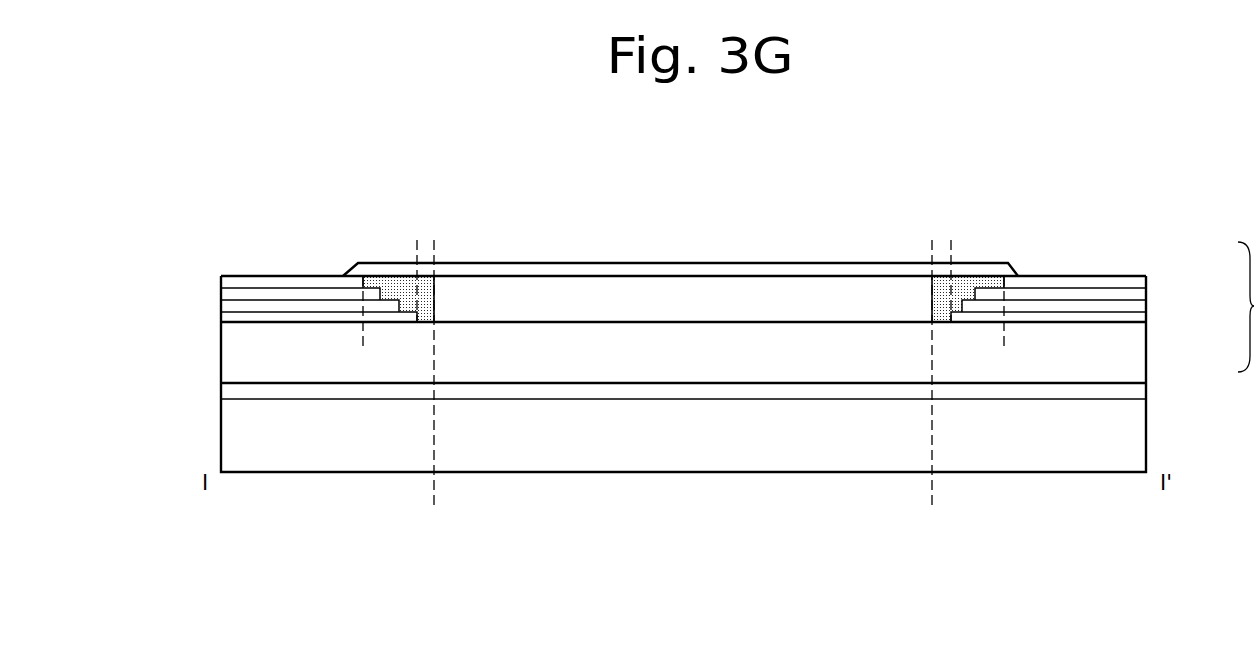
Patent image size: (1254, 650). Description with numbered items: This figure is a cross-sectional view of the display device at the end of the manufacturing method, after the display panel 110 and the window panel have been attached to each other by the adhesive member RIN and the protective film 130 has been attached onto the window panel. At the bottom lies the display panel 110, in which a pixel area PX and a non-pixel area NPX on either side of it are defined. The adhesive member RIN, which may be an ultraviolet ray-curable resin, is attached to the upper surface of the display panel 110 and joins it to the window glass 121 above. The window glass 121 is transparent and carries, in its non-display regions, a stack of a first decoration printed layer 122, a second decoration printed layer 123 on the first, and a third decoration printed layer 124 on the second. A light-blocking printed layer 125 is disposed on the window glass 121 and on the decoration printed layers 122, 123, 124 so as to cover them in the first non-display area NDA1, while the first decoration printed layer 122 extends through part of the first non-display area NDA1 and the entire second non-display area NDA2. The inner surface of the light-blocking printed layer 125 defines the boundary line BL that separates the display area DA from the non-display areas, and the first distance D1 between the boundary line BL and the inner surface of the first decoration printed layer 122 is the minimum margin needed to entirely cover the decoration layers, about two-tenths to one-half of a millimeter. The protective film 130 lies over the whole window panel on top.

The display panel 110 is at (1140, 427).
The adhesive member RIN is at (1140, 390).
The window glass 121 is at (1140, 357).
The first decoration printed layer 122 is at (1140, 318).
The second decoration printed layer 123 is at (1140, 307).
The third decoration printed layer 124 is at (1140, 293).
The light-blocking printed layer 125 is at (978, 282).
The protective film 130 is at (683, 273).
The boundary line BL is at (438, 318).
The first distance D1 is at (392, 240).
The first non-display area NDA1 is at (434, 342).
The second non-display area NDA2 is at (363, 342).
The display area DA is at (434, 342).
The non-pixel area NPX is at (1146, 506).
The pixel area PX is at (434, 499).